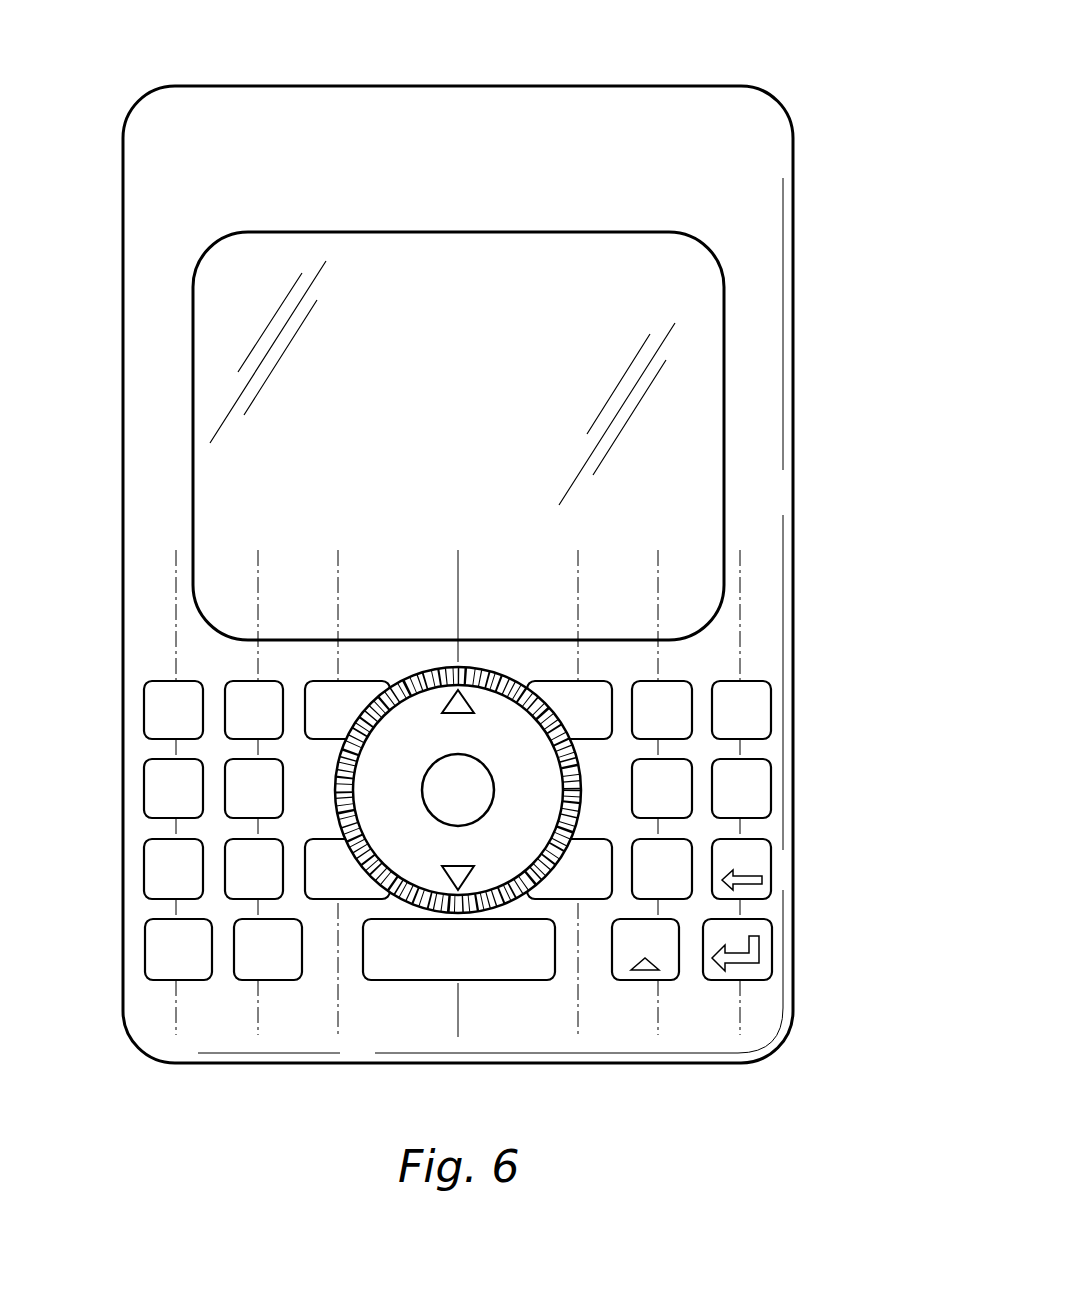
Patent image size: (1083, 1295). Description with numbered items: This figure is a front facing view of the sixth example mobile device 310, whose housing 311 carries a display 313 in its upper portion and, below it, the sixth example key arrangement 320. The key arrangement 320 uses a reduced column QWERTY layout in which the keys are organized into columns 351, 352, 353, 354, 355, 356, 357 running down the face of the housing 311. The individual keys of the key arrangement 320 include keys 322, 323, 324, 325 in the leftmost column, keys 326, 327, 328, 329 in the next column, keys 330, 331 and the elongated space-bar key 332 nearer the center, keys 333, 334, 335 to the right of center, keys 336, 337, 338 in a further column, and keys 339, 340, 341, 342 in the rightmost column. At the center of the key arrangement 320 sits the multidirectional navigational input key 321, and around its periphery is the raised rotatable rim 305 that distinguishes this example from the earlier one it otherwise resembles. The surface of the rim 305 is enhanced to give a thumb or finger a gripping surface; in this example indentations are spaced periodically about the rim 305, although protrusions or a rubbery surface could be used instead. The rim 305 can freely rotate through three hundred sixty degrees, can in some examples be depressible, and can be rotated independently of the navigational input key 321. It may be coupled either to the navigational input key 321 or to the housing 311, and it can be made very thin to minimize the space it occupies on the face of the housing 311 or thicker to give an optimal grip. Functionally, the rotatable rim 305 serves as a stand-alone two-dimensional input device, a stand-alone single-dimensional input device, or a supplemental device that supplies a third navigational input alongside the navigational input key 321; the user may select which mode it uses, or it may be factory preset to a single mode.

The raised rotatable rim 305 is at (408, 669).
The mobile device 310 is at (608, 79).
The housing 311 is at (707, 164).
The display screen 313 is at (555, 405).
The key arrangement 320 is at (461, 845).
The multidirectional navigational input key 321 is at (479, 725).
The QW key 322 is at (144, 712).
The AS key 323 is at (144, 789).
The ZX key 324 is at (144, 872).
The ALT key 325 is at (145, 954).
The E key 326 is at (228, 681).
The D key 327 is at (228, 818).
The C key 328 is at (228, 899).
The NEXT key 329 is at (280, 981).
The RT key 330 is at (357, 681).
The VB key 331 is at (327, 901).
The SPACE key 332 is at (505, 983).
The YU key 333 is at (541, 679).
The N key 334 is at (590, 900).
The symbol key 335 is at (667, 981).
The I key 336 is at (684, 678).
The K key 337 is at (688, 819).
The M key 338 is at (690, 899).
The OP key 339 is at (772, 718).
The L key 340 is at (772, 790).
The DEL key 341 is at (772, 871).
The ENTER key 342 is at (773, 949).
The first key column 351 is at (176, 577).
The second key column 352 is at (258, 573).
The third key column 353 is at (338, 557).
The fourth key column 354 is at (458, 572).
The fifth key column 355 is at (578, 573).
The sixth key column 356 is at (658, 573).
The seventh key column 357 is at (740, 601).